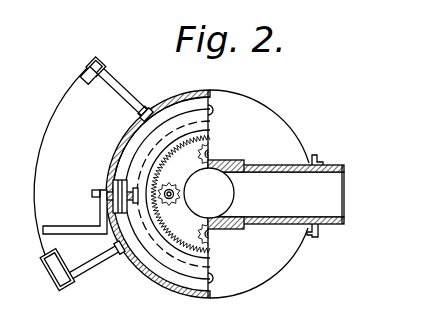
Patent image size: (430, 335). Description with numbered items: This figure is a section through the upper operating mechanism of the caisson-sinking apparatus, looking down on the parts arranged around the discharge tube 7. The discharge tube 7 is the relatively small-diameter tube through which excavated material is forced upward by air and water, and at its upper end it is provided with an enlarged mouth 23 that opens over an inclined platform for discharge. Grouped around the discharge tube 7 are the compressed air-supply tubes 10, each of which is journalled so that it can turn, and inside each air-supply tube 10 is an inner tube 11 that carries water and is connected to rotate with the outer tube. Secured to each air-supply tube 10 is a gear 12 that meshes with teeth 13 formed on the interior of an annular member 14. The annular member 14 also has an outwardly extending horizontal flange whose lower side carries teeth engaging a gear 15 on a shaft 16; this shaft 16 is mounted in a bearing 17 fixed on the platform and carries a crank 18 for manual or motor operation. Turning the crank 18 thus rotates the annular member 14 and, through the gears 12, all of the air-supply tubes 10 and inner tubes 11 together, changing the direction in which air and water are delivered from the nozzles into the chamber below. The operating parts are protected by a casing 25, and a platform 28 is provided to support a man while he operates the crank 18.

The discharge tube 7 is at (185, 188).
The compressed air-supply tubes 10 is at (172, 200).
The inner tube 11 is at (170, 192).
The gear 12 is at (167, 204).
The teeth 13 is at (152, 160).
The annular member 14 is at (185, 137).
The gear 15 is at (115, 146).
The shaft 16 is at (106, 188).
The bearing 17 is at (207, 194).
The crank 18 is at (65, 227).
The enlarged mouth 23 is at (276, 196).
The casing 25 is at (114, 154).
The platform 28 is at (33, 210).